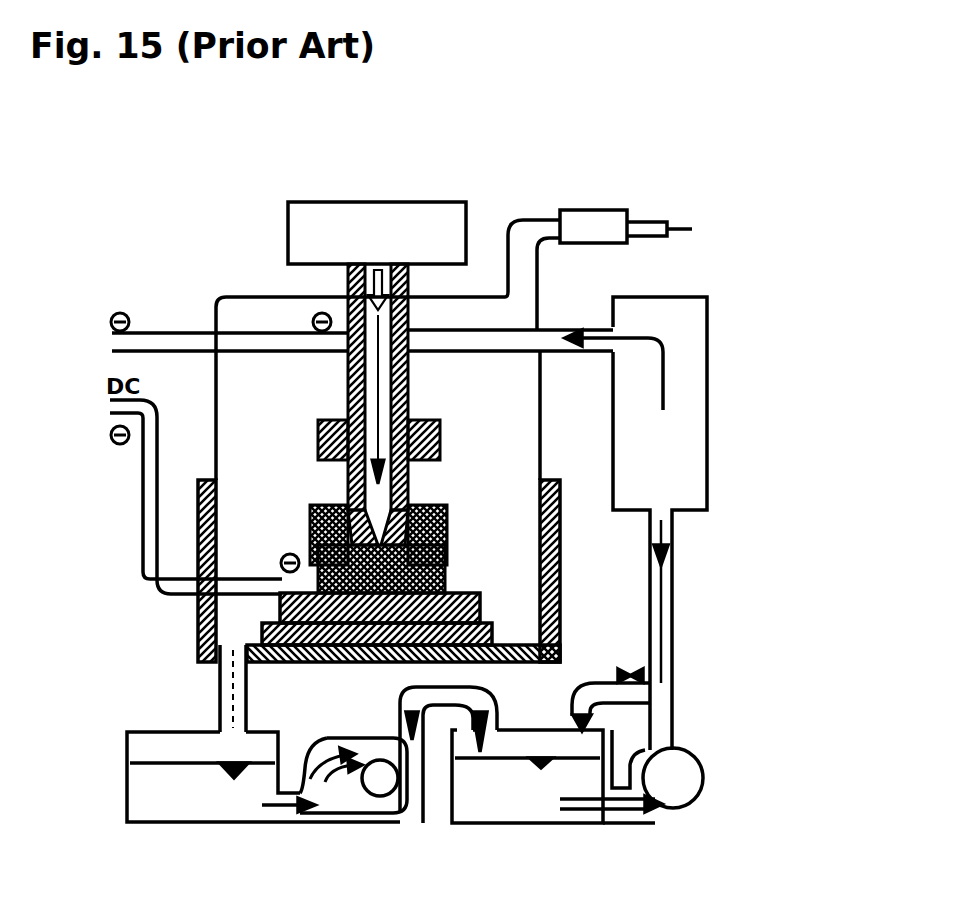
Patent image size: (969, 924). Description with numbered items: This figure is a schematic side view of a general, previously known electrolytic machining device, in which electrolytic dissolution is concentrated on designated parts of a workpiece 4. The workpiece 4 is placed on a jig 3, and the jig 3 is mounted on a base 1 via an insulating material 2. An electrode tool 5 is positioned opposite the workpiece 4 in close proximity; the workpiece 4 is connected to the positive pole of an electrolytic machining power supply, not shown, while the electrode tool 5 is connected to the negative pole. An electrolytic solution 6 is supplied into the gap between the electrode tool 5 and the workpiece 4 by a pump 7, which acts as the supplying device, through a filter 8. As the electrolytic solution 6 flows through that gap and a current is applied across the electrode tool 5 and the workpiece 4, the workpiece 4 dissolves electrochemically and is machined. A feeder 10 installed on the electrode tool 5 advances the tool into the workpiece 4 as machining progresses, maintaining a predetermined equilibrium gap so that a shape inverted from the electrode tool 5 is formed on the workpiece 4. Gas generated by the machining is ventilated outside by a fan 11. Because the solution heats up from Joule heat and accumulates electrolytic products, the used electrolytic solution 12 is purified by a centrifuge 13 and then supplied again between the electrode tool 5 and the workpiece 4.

The base 1 is at (490, 662).
The insulating material 2 is at (483, 630).
The jig 3 is at (452, 592).
The workpiece 4 is at (306, 548).
The electrode tool 5 is at (413, 470).
The electrolytic solution 6 is at (530, 806).
The pump 7 is at (703, 780).
The filter 8 is at (706, 420).
The feeder 10 is at (399, 218).
The fan 11 is at (595, 222).
The used electrolytic solution 12 is at (196, 804).
The centrifuge 13 is at (395, 814).